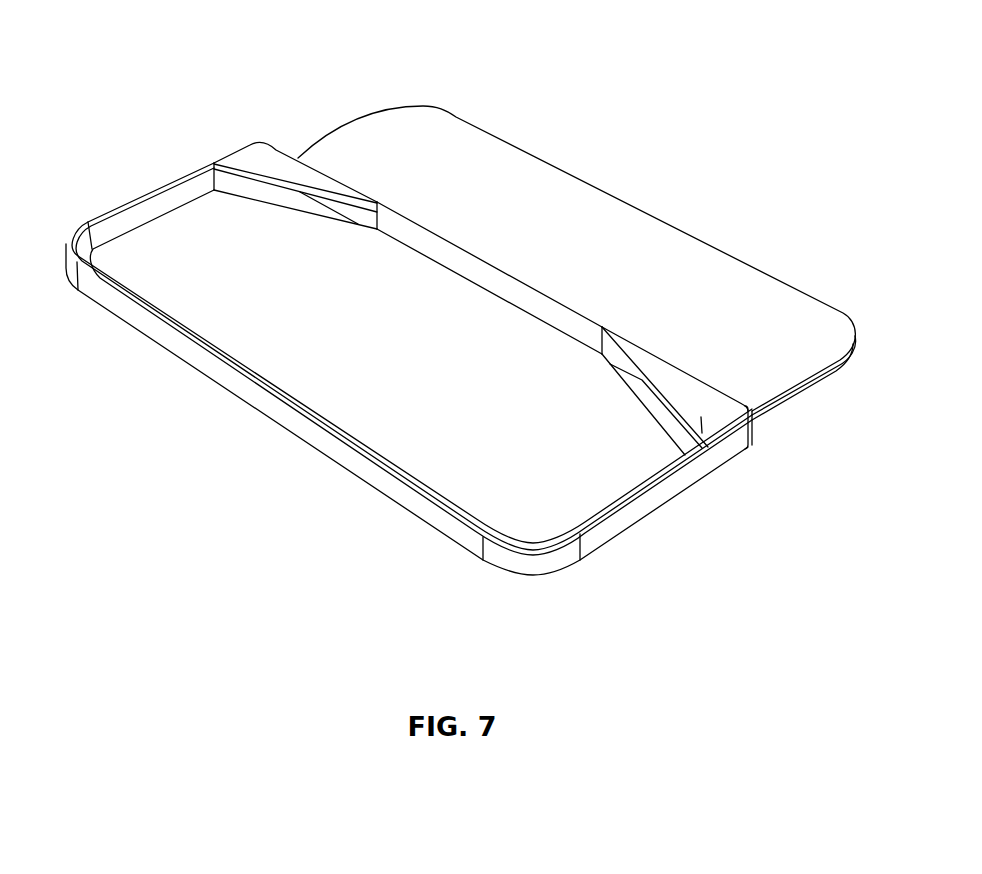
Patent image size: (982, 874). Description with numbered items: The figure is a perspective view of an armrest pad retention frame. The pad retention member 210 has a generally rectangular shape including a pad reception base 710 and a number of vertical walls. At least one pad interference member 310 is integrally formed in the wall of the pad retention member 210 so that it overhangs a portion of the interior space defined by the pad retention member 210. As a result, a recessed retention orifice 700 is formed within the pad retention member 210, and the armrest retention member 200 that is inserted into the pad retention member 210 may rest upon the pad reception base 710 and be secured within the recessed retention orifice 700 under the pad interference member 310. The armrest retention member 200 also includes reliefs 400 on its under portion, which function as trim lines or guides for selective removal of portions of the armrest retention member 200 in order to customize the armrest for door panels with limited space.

The armrest retention member 200 is at (397, 104).
The pad retention member 210 is at (125, 344).
The pad interference member 310 is at (268, 157).
The reliefs 400 is at (840, 362).
The recessed retention orifice 700 is at (243, 199).
The pad reception base 710 is at (352, 356).